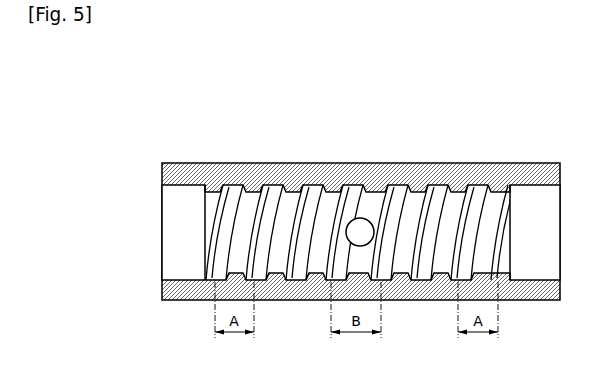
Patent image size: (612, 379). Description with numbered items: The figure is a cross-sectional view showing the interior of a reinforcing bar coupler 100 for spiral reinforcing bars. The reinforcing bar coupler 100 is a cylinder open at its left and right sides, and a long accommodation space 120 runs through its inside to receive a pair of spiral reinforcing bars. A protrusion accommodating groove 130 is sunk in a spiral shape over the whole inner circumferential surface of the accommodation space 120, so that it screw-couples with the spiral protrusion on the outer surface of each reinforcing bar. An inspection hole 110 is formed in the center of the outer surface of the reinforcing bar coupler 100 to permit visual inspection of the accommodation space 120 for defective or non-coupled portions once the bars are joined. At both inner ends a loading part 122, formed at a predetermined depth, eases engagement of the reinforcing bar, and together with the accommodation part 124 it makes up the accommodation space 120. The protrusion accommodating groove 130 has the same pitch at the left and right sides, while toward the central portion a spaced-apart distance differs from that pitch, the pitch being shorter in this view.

The reinforcing bar coupler 100 is at (299, 208).
The inspection hole 110 is at (299, 224).
The accommodation space 120 is at (299, 224).
The loading part 122 is at (178, 262).
The accommodation part 124 is at (305, 183).
The protrusion accommodating groove 130 is at (268, 187).